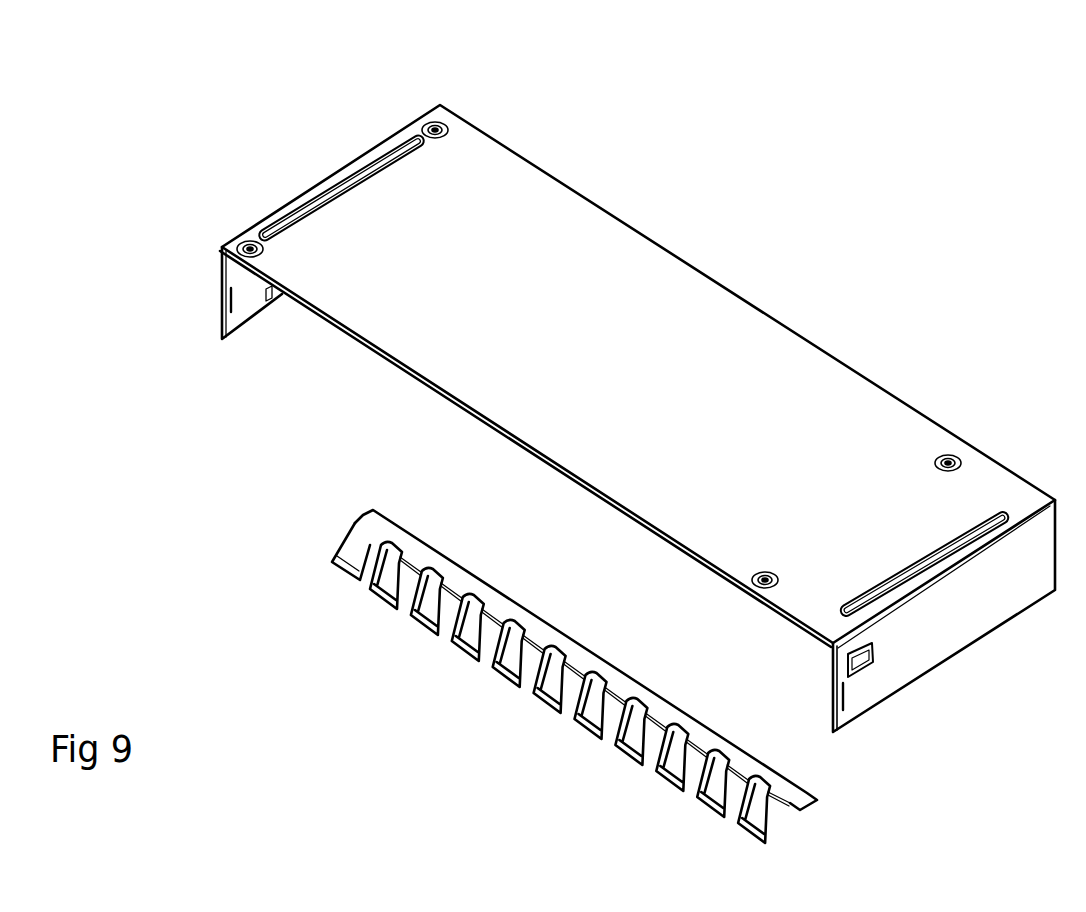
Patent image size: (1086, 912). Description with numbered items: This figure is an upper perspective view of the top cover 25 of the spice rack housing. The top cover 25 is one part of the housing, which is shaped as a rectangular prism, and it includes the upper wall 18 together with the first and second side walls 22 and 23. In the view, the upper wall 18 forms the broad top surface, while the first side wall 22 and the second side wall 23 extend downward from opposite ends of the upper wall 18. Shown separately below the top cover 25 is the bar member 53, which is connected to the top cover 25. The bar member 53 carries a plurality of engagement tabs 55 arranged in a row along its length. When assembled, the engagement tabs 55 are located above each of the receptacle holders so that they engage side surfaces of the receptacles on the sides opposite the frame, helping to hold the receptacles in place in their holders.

The upper wall 18 is at (553, 268).
The top cover 25 is at (753, 383).
The first side wall 22 is at (247, 302).
The second side wall 23 is at (975, 600).
The bar member 53 is at (797, 797).
The engagement tabs 55 is at (548, 718).